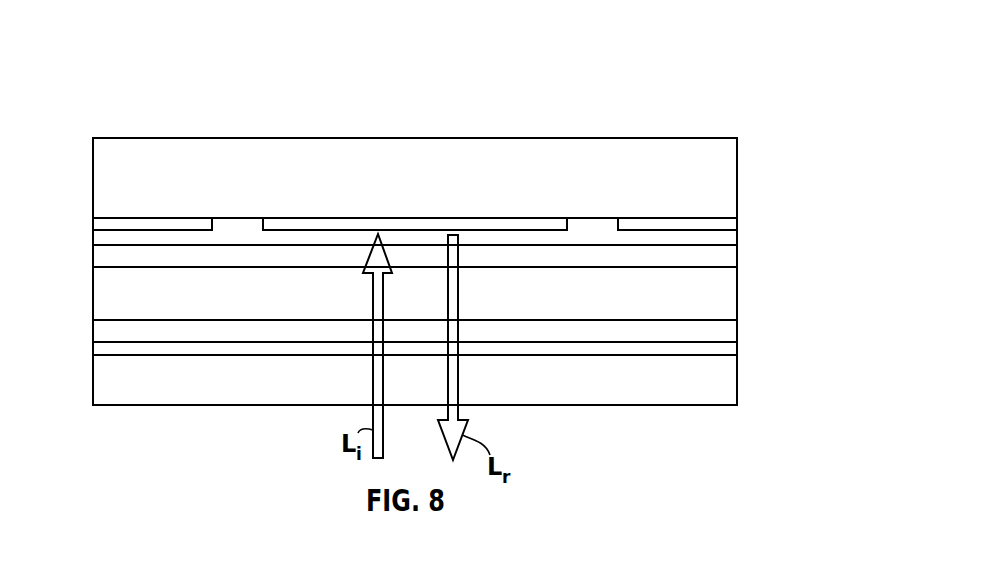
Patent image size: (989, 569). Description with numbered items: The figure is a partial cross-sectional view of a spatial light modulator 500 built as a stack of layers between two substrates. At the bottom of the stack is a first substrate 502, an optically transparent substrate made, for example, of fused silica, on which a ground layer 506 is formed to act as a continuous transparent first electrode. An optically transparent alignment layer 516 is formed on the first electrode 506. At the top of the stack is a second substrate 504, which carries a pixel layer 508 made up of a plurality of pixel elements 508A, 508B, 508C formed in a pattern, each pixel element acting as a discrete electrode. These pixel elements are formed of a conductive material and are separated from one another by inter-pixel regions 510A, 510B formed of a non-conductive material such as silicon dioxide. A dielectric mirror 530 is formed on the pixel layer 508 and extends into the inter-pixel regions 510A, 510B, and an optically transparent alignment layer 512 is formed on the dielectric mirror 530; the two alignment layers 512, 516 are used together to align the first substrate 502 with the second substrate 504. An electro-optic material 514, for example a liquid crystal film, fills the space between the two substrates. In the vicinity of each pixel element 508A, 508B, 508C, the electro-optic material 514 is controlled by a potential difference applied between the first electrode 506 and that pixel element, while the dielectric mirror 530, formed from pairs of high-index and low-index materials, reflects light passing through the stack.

The spatial light modulator 500 is at (760, 47).
The first substrate 502 is at (738, 386).
The second substrate 504 is at (738, 146).
The ground layer 506 is at (738, 350).
The pixel layer 508 is at (463, 158).
The pixel element 508A is at (691, 217).
The pixel element 508B is at (383, 217).
The pixel element 508C is at (148, 217).
The inter-pixel region 510A is at (591, 203).
The inter-pixel region 510B is at (241, 203).
The alignment layer 512 is at (738, 262).
The electro-optic material 514 is at (87, 269).
The alignment layer 516 is at (738, 331).
The dielectric mirror 530 is at (738, 236).